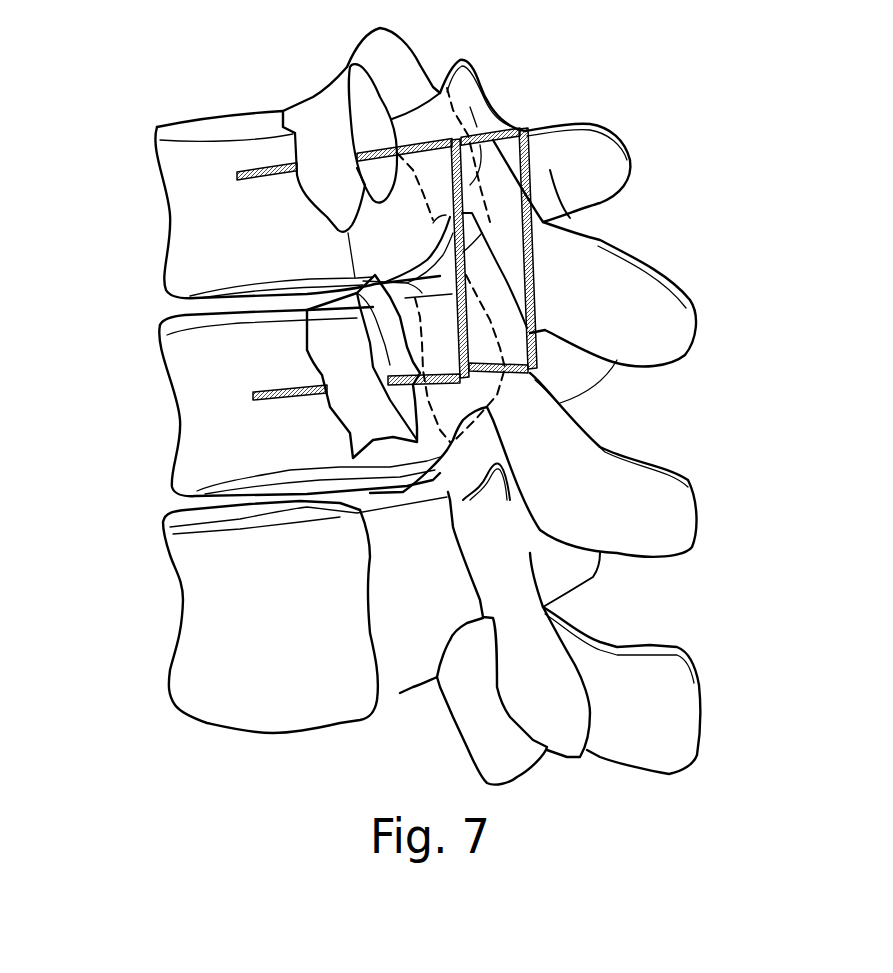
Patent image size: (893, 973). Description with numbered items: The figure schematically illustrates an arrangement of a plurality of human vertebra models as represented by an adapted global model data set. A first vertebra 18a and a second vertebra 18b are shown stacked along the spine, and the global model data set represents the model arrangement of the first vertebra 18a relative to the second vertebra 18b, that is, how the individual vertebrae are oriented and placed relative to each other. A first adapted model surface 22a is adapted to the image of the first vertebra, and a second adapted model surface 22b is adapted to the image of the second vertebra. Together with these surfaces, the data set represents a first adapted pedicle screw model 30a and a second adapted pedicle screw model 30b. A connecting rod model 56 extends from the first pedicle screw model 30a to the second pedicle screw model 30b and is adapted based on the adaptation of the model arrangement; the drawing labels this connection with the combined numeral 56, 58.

The first vertebra 18a is at (141, 257).
The second vertebra 18b is at (148, 452).
The first adapted model surface 22a is at (161, 290).
The second adapted model surface 22b is at (165, 483).
The first adapted pedicle screw model 30a is at (455, 118).
The second adapted pedicle screw model 30b is at (520, 125).
The connecting rod model 56 is at (537, 206).
The bone screw 58 is at (390, 381).